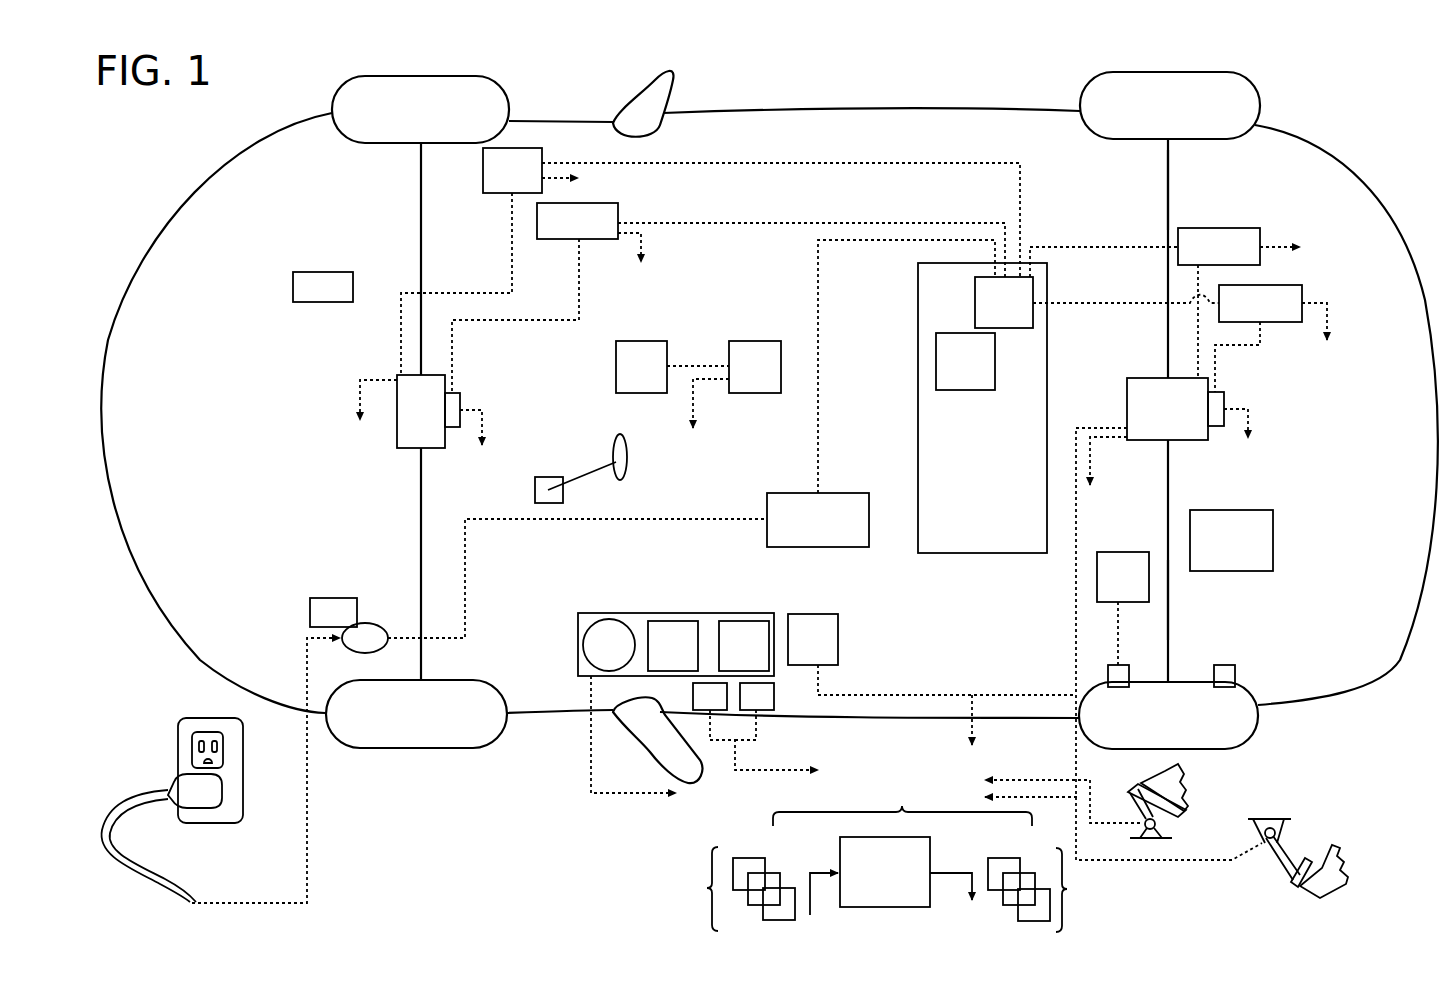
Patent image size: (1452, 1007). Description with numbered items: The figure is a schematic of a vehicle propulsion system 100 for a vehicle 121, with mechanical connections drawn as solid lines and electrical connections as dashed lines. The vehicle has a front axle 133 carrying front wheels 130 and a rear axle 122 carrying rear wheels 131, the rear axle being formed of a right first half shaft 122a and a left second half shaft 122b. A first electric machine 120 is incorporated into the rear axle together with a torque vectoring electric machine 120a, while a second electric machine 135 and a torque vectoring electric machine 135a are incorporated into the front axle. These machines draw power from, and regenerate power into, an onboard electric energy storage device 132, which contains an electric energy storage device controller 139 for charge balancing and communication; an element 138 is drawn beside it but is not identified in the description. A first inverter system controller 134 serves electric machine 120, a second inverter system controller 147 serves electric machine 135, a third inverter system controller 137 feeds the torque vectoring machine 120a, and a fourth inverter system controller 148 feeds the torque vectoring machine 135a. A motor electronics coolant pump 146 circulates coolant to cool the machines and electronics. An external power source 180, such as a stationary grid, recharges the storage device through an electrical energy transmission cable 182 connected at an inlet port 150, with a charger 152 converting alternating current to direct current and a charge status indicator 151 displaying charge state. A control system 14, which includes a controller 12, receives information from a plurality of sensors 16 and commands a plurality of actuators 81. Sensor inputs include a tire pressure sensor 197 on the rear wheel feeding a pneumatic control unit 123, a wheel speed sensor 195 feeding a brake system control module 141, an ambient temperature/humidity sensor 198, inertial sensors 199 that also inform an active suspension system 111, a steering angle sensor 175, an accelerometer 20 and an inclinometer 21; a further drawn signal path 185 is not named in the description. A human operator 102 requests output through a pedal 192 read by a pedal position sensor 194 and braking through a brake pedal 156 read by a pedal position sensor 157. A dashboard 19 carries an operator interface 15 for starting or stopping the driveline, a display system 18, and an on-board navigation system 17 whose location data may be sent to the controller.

The vehicle propulsion system 100 is at (905, 92).
The front wheels 130 is at (432, 76).
The rear wheels 131 is at (1202, 73).
The vehicle 121 is at (1372, 705).
The front axle 133 is at (412, 486).
The rear axle 122 is at (1196, 218).
The first half shaft 122a is at (1168, 194).
The second half shaft 122b is at (1168, 608).
The second inverter system controller 147 is at (710, 261).
The fourth inverter system controller 148 is at (728, 298).
The motor electronics coolant pump 146 is at (323, 287).
The second electric machine 135 is at (392, 424).
The torque vectoring electric machine 135a is at (457, 393).
The charge status indicator 151 is at (333, 612).
The inlet port 150 is at (364, 623).
The steering angle sensor 175 is at (548, 477).
The active suspension system 111 is at (672, 367).
The inertial sensors 199 is at (738, 377).
The charger 152 is at (881, 393).
The electric energy storage device 132 is at (968, 456).
The electric energy storage device controller 139 is at (965, 361).
The battery controller 138 is at (1097, 287).
The first inverter system controller 134 is at (1254, 303).
The third inverter system controller 137 is at (1273, 338).
The first electric machine 120 is at (1167, 619).
The torque vectoring electric machine 120a is at (1220, 392).
The brake system control module 141 is at (1214, 552).
The pneumatic control unit 123 is at (1106, 588).
The tire pressure sensor 197 is at (1127, 665).
The wheel speed sensor 195 is at (1226, 665).
The dashboard 19 is at (705, 613).
The operator interface 15 is at (597, 656).
The display system 18 is at (661, 656).
The on-board navigation system 17 is at (732, 656).
The ambient temperature/humidity sensor 198 is at (796, 650).
The inclinometer 21 is at (755, 726).
The accelerometer 20 is at (754, 711).
The vehicle speed sensor 185 is at (1025, 695).
The control system 14 is at (956, 793).
The controller 12 is at (891, 876).
The sensors 16 is at (712, 889).
The actuators 81 is at (1075, 890).
The pedal 192 is at (1128, 804).
The pedal position sensor 194 is at (1157, 823).
The human operator 102 is at (1166, 790).
The pedal position sensor 157 is at (1264, 833).
The brake pedal 156 is at (1293, 882).
The power source 180 is at (178, 749).
The electrical energy transmission cable 182 is at (108, 816).